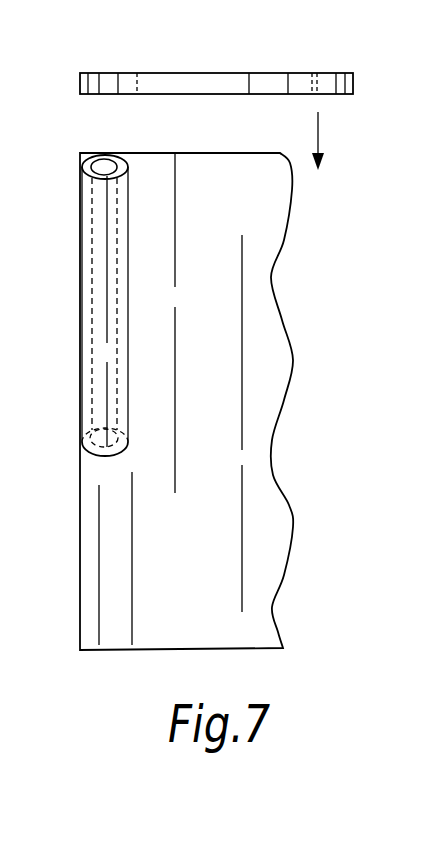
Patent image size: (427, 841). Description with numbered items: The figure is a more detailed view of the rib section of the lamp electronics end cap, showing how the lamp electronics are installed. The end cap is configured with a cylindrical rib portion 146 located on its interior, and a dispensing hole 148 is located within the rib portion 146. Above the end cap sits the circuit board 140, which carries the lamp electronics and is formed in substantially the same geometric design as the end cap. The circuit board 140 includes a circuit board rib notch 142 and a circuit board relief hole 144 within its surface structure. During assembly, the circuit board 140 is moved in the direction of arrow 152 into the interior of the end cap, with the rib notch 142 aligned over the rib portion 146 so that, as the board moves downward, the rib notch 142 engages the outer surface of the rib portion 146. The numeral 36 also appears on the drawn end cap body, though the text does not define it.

The plate 36 is at (80, 562).
The circuit board 140 is at (212, 48).
The circuit board rib notch 142 is at (128, 86).
The circuit board relief hole 144 is at (322, 85).
The rib portion 146 is at (128, 246).
The dispensing hole 148 is at (100, 163).
The arrow 152 is at (322, 127).